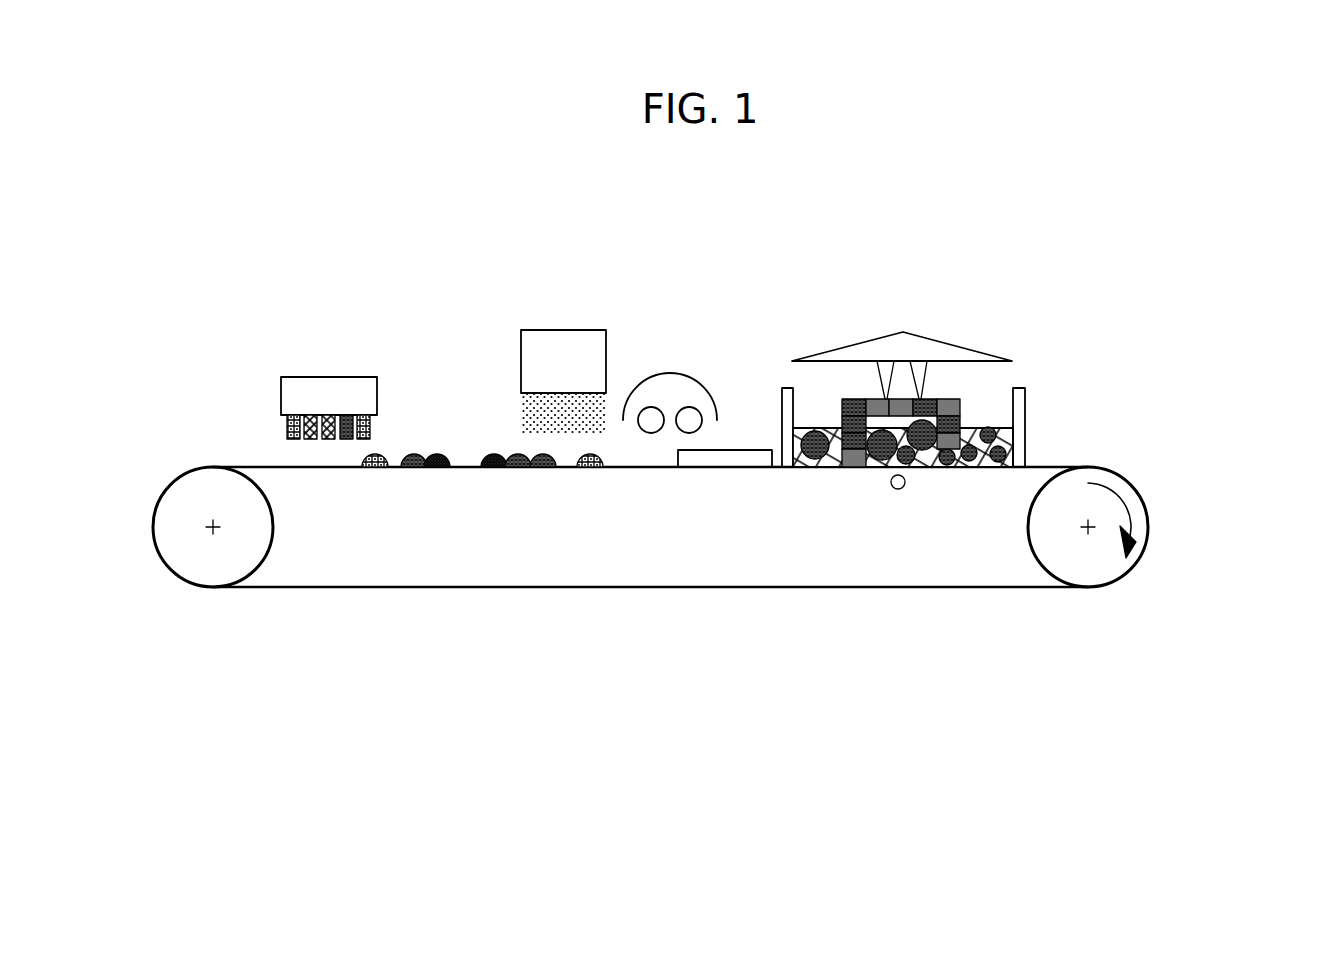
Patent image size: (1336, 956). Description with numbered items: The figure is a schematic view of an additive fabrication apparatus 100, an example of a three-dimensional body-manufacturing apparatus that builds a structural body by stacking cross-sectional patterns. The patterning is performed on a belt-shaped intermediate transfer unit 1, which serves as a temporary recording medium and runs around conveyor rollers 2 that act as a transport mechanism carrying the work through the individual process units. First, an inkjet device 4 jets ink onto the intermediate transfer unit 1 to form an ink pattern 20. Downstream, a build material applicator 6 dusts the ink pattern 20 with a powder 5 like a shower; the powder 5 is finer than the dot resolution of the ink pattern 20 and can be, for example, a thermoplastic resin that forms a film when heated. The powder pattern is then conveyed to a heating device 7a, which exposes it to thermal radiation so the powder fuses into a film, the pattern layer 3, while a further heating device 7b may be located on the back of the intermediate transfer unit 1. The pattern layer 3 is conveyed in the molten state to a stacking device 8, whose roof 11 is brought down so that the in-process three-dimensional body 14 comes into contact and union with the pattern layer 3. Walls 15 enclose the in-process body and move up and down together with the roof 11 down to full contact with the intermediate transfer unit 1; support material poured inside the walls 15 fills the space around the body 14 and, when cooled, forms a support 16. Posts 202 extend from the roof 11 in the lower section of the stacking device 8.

The intermediate transfer unit 1 is at (262, 466).
The conveyor rollers 2 is at (207, 577).
The pattern layer 3 is at (724, 458).
The inkjet device 4 is at (320, 377).
The powder 5 is at (527, 410).
The build material applicator 6 is at (548, 330).
The heating device 7a is at (650, 376).
The heating device 7b is at (898, 490).
The stacking device 8 is at (952, 339).
The roof 11 is at (795, 317).
The in-process three-dimensional body 14 is at (950, 399).
The walls 15 is at (1022, 410).
The support 16 is at (1008, 445).
The ink pattern 20 is at (492, 478).
The additive fabrication apparatus 100 is at (1193, 253).
The posts 202 is at (910, 371).